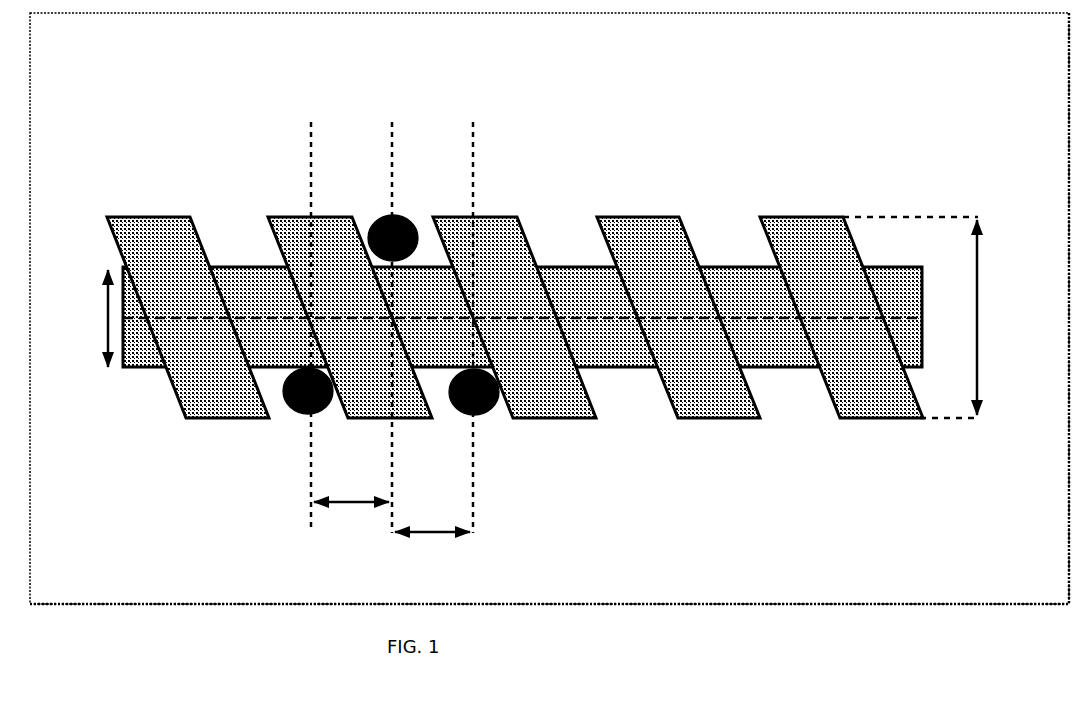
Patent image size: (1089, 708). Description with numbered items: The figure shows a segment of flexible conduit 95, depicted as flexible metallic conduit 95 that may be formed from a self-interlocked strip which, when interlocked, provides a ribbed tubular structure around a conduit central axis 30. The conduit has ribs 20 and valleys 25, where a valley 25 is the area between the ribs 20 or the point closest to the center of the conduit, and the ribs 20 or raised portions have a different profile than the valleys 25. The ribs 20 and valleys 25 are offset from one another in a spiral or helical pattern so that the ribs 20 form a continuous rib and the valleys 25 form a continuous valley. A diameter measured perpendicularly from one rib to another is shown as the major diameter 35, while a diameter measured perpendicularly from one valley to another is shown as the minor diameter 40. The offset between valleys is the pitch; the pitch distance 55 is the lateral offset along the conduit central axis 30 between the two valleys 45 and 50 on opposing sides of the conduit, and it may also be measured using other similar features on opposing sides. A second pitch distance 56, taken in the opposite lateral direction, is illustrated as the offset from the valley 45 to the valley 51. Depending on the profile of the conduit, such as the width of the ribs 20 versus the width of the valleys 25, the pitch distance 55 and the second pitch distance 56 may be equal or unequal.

The flexible metallic conduit 95 is at (515, 275).
The ribs 20 is at (629, 217).
The valleys 25 is at (717, 267).
The conduit central axis 30 is at (785, 318).
The major diameter 35 is at (932, 317).
The minor diameter 40 is at (87, 318).
The valley 45 is at (393, 216).
The valley 50 is at (490, 410).
The valley 51 is at (298, 405).
The pitch distance 55 is at (434, 347).
The second pitch distance 56 is at (351, 331).